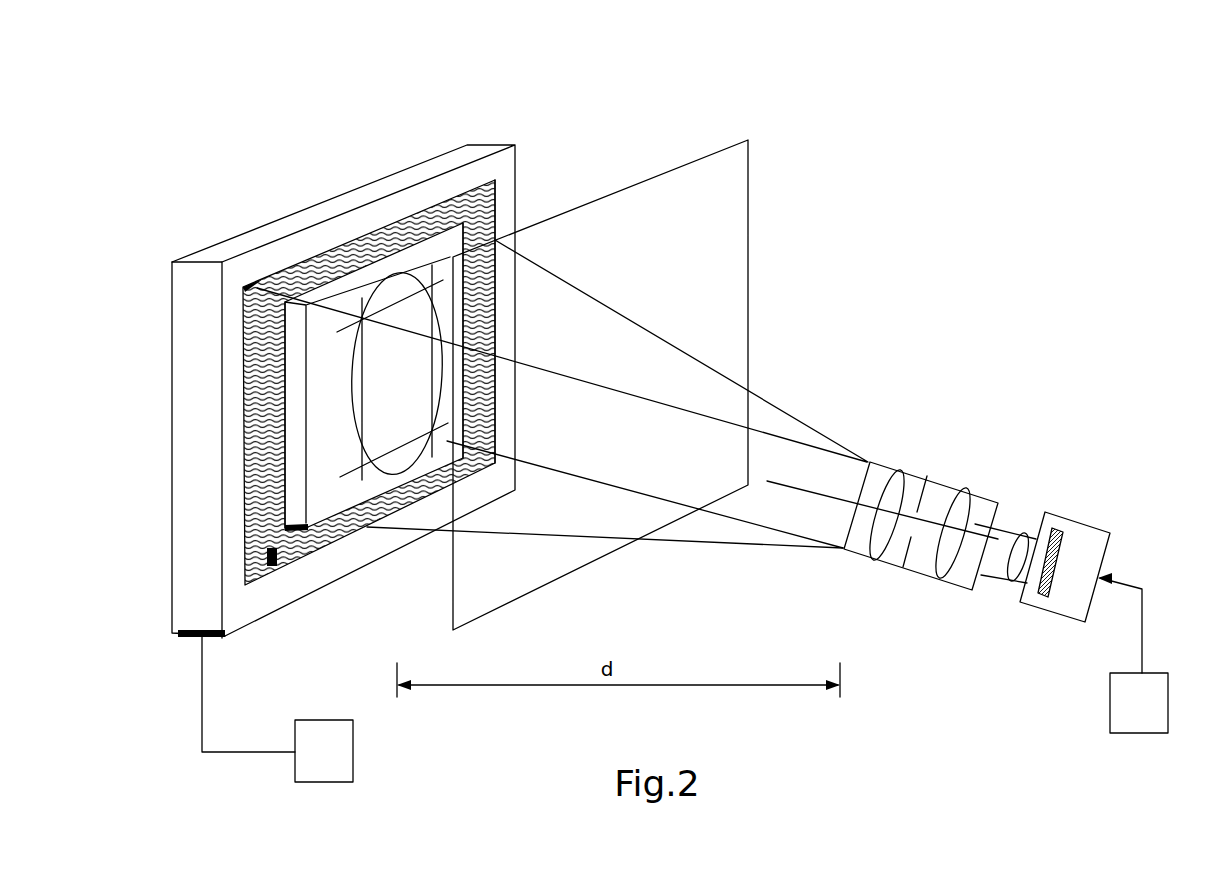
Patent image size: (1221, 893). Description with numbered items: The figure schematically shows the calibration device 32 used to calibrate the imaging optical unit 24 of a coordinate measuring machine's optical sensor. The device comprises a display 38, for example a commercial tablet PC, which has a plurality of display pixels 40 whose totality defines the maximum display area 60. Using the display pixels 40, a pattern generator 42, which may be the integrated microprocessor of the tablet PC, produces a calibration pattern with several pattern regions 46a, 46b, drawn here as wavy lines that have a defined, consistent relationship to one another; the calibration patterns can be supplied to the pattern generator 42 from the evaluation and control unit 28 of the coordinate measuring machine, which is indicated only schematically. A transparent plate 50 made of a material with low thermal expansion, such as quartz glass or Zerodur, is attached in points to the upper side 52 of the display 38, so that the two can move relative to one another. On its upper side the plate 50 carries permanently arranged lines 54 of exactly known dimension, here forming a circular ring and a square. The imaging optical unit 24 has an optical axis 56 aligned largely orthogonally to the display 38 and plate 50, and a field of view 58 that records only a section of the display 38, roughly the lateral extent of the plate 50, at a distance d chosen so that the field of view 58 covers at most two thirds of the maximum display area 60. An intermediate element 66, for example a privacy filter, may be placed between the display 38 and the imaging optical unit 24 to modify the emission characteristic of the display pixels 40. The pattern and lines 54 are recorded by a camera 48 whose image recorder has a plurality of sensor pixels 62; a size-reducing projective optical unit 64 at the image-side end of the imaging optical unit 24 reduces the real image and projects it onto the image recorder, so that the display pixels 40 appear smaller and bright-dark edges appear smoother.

The imaging optical unit 24 is at (897, 567).
The evaluation and control unit 28 is at (1147, 734).
The calibration device 32 is at (895, 268).
The display 38 is at (190, 458).
The display pixels 40 is at (256, 284).
The pattern generator 42 is at (323, 783).
The pattern region 46a is at (402, 217).
The pattern region 46b is at (472, 238).
The camera 48 is at (1077, 523).
The transparent plate 50 is at (295, 382).
The upper side 52 is at (322, 238).
The lines 54 is at (345, 436).
The optical axis 56 is at (808, 492).
The field of view 58 is at (730, 546).
The maximum display area 60 is at (500, 191).
The sensor pixels 62 is at (1052, 570).
The projective optical unit 64 is at (1003, 577).
The intermediate element 66 is at (752, 195).